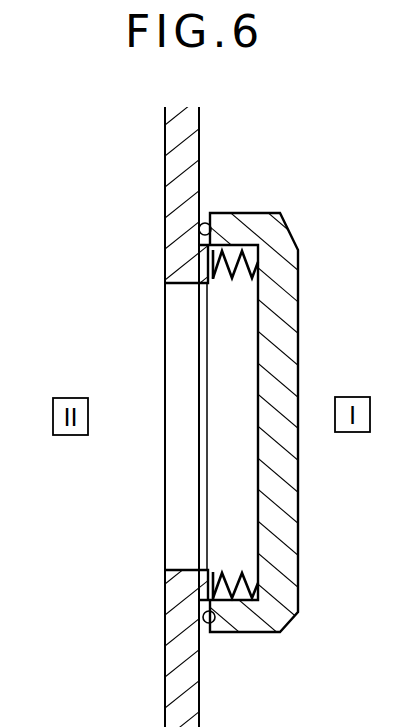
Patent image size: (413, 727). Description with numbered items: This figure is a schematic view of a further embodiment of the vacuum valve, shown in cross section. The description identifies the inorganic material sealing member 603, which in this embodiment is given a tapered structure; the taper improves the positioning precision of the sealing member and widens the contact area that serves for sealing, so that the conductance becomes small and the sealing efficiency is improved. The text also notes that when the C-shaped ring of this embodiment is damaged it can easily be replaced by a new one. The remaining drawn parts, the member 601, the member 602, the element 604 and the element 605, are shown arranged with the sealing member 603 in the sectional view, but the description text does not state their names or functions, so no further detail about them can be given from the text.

The movable holder member 601 is at (288, 525).
The housing wall 602 is at (181, 677).
The inorganic material sealing member 603 is at (203, 259).
The ball 604 is at (205, 223).
The spring 605 is at (250, 264).